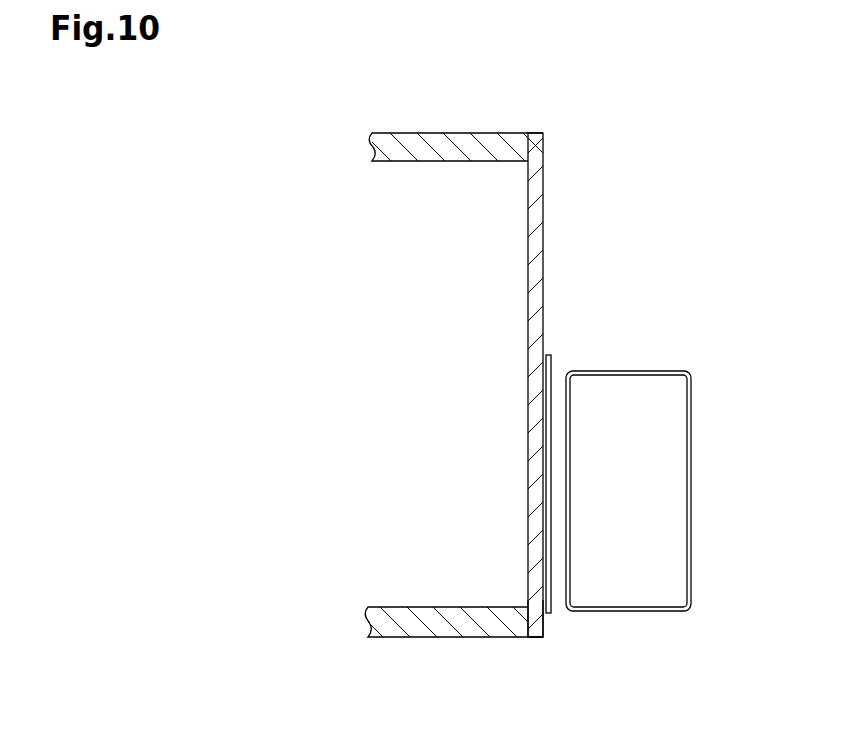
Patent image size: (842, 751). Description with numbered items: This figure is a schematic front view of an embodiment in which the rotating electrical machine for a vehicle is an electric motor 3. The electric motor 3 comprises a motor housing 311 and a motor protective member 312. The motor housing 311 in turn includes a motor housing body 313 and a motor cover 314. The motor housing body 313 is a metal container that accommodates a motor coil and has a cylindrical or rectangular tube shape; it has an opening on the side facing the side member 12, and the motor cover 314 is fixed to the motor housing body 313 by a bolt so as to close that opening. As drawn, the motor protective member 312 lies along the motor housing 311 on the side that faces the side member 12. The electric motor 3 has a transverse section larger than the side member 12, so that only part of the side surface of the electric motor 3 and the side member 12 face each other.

The electric motor 3 is at (650, 242).
The motor housing 311 is at (556, 291).
The motor protective member 312 is at (553, 379).
The motor housing body 313 is at (441, 146).
The motor cover 314 is at (528, 640).
The side member 12 is at (657, 372).